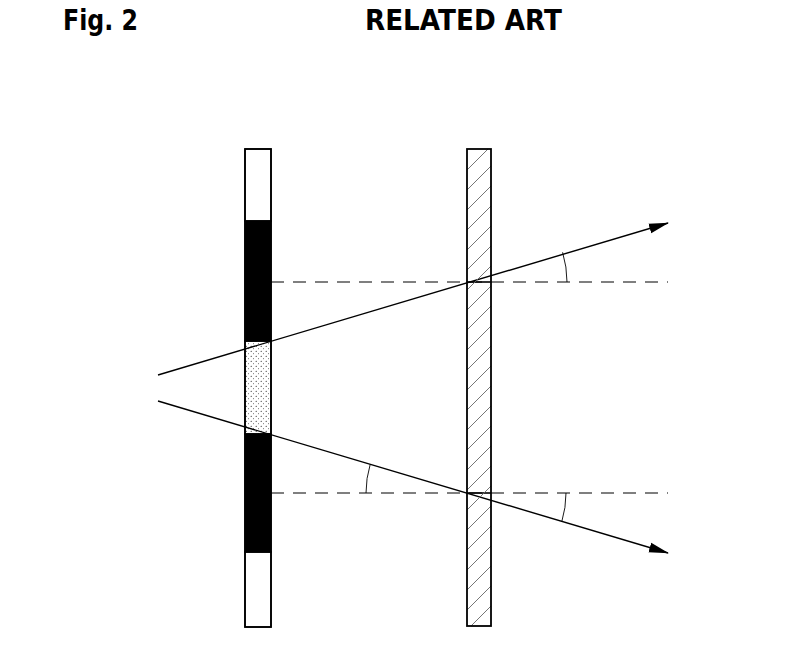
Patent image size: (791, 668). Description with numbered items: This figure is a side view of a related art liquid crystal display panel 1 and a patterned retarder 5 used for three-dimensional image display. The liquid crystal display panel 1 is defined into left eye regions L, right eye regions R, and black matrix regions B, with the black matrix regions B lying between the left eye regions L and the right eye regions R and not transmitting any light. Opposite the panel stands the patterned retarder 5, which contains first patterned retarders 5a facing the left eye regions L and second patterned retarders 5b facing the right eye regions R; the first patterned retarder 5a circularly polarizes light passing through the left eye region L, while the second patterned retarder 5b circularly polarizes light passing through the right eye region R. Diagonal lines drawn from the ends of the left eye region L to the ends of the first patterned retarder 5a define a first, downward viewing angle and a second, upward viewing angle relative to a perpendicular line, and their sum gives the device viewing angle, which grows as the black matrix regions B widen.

The liquid crystal display panel 1 is at (226, 365).
The patterned retarder 5 is at (505, 376).
The first patterned retarder 5a is at (487, 372).
The second patterned retarder 5b is at (487, 198).
The right eye region R is at (246, 189).
The black matrix region B is at (246, 271).
The left eye region L is at (246, 389).